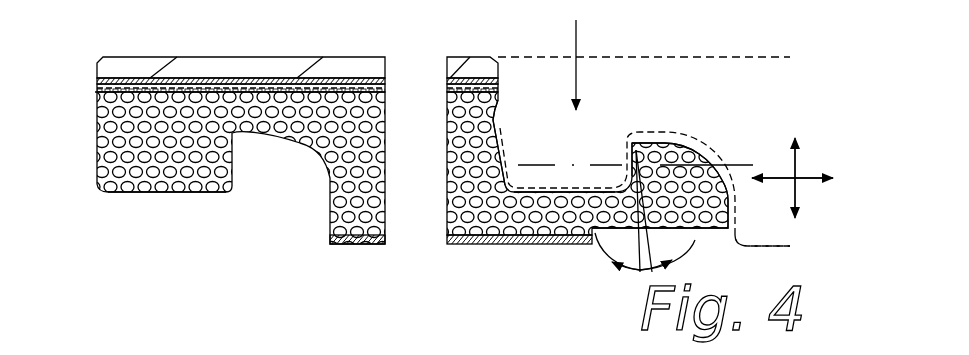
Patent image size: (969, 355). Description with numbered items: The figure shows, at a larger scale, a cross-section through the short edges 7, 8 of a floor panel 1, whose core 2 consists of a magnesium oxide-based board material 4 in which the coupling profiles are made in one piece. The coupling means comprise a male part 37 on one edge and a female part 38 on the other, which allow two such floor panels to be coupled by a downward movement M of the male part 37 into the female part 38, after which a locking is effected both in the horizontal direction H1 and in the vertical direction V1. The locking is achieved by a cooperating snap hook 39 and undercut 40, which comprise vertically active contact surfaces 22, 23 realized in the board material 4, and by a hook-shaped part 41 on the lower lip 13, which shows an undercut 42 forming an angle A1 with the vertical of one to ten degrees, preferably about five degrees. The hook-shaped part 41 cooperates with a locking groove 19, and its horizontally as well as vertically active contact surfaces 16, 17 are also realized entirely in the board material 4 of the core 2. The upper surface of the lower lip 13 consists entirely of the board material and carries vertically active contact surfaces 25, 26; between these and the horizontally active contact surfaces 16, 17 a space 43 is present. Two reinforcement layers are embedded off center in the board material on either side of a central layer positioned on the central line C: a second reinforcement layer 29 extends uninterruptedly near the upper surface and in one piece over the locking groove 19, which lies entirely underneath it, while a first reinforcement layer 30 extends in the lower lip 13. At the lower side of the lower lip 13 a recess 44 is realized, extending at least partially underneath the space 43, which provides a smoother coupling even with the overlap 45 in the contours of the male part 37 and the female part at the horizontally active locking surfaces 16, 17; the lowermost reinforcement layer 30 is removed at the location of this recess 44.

The floor panel 1 is at (266, 55).
The core 2 is at (88, 247).
The magnesium oxide-based board material 4 is at (367, 178).
The short edge 7 is at (170, 223).
The short edge 8 is at (694, 112).
The lower lip 13 is at (567, 205).
The contact surface 16 is at (235, 158).
The contact surface 17 is at (624, 165).
The locking groove 19 is at (268, 172).
The vertically active contact surface 22 is at (500, 93).
The vertically active contact surface 23 is at (501, 140).
The vertically active contact surface 25 is at (137, 192).
The vertically active contact surface 26 is at (530, 193).
The second reinforcement layer 29 is at (241, 88).
The first reinforcement layer 30 is at (470, 243).
The male part 37 is at (199, 228).
The female part 38 is at (604, 84).
The snap hook 39 is at (93, 137).
The undercut 40 is at (447, 147).
The hook-shaped part 41 is at (666, 157).
The undercut 42 is at (658, 152).
The space 43 is at (597, 232).
The recess 44 is at (735, 246).
The overlap 45 is at (633, 162).
The downward movement M is at (577, 45).
The central line C is at (553, 165).
The vertical direction V1 is at (797, 166).
The horizontal direction H1 is at (786, 178).
The angle A1 is at (613, 264).